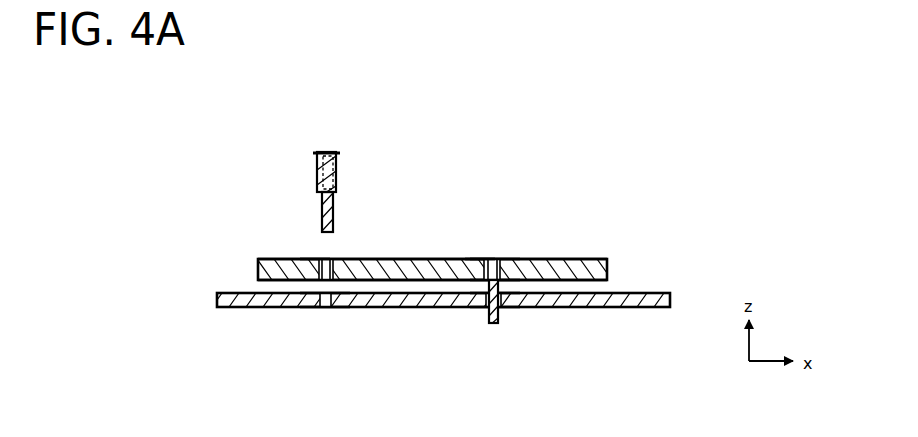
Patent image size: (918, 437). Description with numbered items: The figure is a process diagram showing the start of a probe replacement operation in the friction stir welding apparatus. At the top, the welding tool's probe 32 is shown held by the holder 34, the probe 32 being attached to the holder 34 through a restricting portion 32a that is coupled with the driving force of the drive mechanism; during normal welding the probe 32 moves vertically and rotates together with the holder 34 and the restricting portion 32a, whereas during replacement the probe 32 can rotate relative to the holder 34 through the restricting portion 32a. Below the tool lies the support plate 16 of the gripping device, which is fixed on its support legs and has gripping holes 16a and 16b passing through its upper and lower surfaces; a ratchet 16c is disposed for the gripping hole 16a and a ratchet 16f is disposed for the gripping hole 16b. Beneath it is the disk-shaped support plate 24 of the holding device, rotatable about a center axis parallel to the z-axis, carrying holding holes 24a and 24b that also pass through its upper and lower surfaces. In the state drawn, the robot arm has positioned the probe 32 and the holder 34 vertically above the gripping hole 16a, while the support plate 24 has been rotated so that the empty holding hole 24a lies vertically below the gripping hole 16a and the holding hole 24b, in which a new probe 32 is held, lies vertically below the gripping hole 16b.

The support plate 16 is at (530, 262).
The gripping hole 16a is at (338, 258).
The gripping hole 16b is at (492, 258).
The ratchet 16c is at (308, 253).
The ratchet 16f is at (478, 256).
The support plate 24 is at (625, 298).
The holding hole 24a is at (325, 308).
The holding hole 24b is at (483, 308).
The probe 32 is at (499, 316).
The restricting portion 32a is at (335, 166).
The holder 34 is at (317, 183).